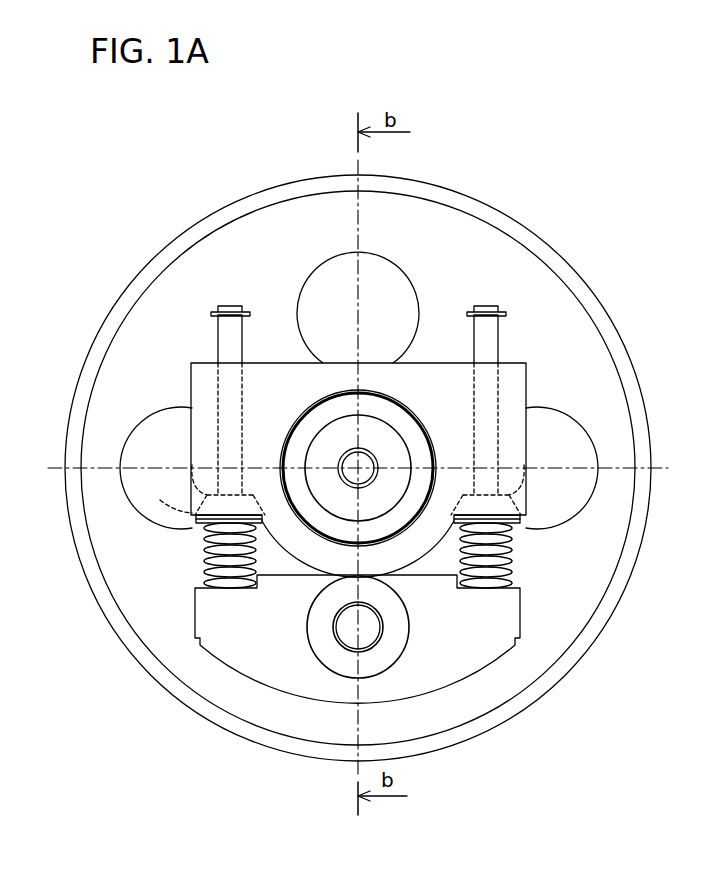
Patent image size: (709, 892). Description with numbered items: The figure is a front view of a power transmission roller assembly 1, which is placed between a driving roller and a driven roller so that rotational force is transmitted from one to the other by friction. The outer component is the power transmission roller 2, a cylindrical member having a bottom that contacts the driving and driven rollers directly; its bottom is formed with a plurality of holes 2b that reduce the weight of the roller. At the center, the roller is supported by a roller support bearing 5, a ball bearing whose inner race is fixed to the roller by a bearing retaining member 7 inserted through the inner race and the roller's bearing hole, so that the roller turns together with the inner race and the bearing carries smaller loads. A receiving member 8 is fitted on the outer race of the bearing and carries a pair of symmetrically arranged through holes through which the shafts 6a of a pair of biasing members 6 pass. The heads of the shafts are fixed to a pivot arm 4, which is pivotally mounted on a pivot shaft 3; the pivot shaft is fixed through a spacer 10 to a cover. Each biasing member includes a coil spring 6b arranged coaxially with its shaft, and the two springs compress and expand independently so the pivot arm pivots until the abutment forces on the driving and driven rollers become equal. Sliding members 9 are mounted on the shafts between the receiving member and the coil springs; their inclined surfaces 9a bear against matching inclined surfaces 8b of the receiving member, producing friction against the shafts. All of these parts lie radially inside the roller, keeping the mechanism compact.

The power transmission roller assembly 1 is at (486, 194).
The power transmission roller 2 is at (540, 253).
The holes 2b is at (315, 357).
The pivot shaft 3 is at (347, 622).
The pivot arm 4 is at (470, 648).
The roller support bearing 5 is at (423, 418).
The biasing members 6 is at (184, 553).
The shaft 6a is at (232, 338).
The coil spring 6b is at (223, 560).
The bearing retaining member 7 is at (351, 461).
The receiving member 8 is at (518, 382).
The inclined surfaces 8b is at (253, 495).
The sliding members 9 is at (160, 500).
The inclined surfaces 9a is at (192, 465).
The spacer 10 is at (393, 608).